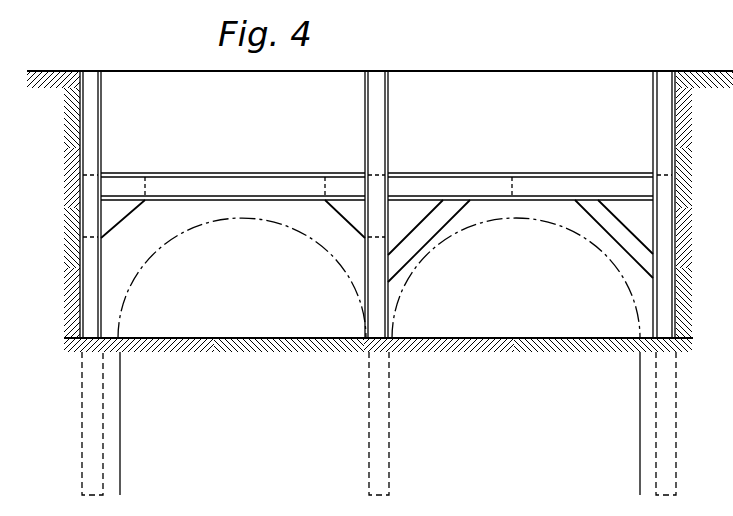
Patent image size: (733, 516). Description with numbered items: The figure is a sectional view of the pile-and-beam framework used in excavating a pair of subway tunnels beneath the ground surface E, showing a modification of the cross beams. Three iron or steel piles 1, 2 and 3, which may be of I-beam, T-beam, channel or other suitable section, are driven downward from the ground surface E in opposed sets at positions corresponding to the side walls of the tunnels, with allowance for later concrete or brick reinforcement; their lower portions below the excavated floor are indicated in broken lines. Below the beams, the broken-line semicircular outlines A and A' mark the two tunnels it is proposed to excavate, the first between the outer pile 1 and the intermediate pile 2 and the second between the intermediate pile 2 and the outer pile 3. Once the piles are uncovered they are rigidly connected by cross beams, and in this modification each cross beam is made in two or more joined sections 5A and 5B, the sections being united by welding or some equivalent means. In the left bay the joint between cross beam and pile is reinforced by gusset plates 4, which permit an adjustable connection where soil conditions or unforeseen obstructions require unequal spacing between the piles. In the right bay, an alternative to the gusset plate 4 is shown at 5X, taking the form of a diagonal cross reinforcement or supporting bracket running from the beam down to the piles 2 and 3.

The pile 1 is at (88, 121).
The pile 2 is at (370, 126).
The pile 3 is at (665, 110).
The gusset plate 4 is at (118, 212).
The cross beam section 5A is at (204, 185).
The cross beam section 5B is at (287, 185).
The cross reinforcement or supporting bracket 5X is at (430, 230).
The ground surface E is at (285, 66).
The tunnel outline A is at (242, 356).
The tunnel outline A' is at (516, 356).